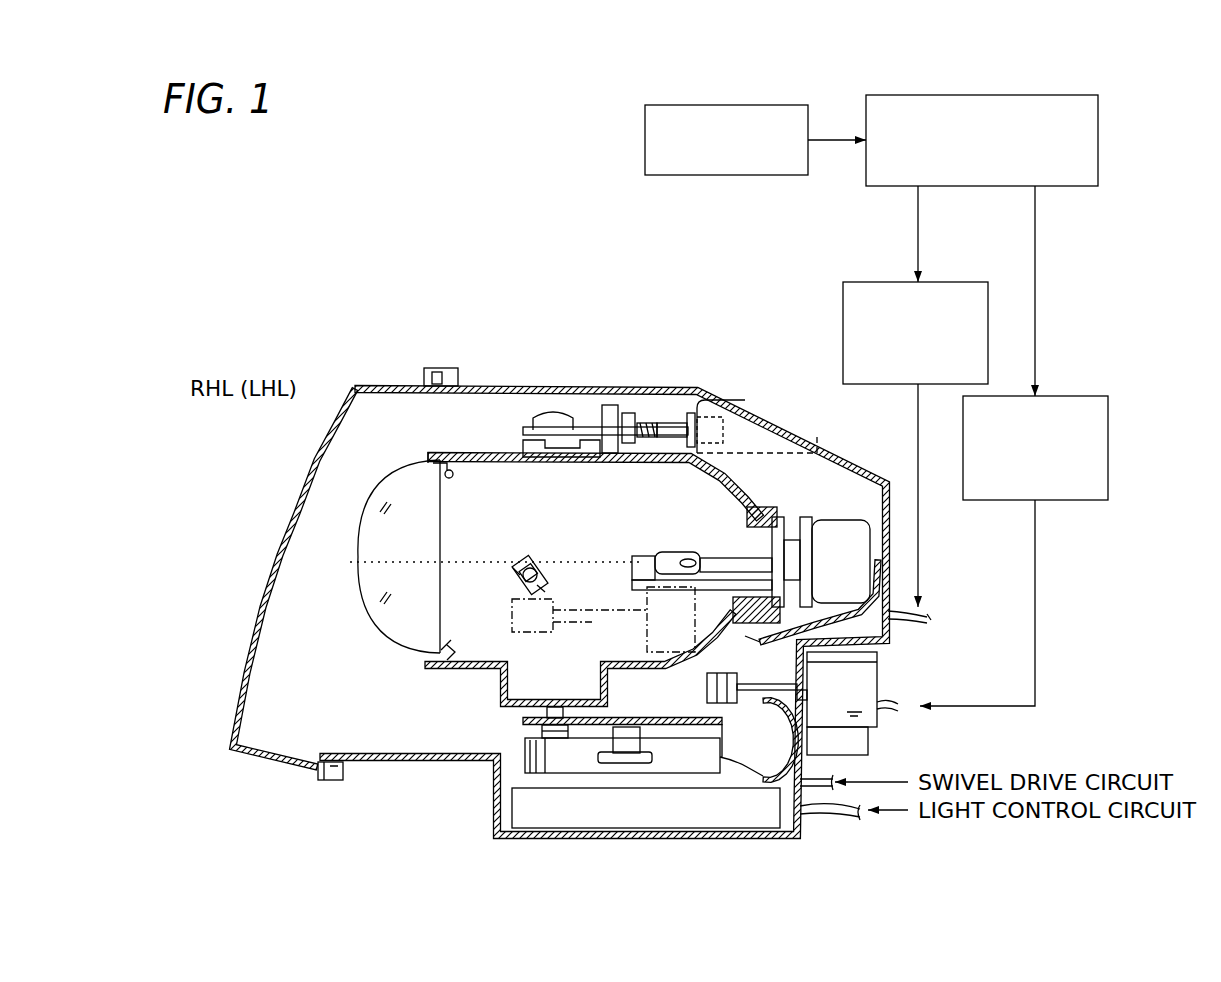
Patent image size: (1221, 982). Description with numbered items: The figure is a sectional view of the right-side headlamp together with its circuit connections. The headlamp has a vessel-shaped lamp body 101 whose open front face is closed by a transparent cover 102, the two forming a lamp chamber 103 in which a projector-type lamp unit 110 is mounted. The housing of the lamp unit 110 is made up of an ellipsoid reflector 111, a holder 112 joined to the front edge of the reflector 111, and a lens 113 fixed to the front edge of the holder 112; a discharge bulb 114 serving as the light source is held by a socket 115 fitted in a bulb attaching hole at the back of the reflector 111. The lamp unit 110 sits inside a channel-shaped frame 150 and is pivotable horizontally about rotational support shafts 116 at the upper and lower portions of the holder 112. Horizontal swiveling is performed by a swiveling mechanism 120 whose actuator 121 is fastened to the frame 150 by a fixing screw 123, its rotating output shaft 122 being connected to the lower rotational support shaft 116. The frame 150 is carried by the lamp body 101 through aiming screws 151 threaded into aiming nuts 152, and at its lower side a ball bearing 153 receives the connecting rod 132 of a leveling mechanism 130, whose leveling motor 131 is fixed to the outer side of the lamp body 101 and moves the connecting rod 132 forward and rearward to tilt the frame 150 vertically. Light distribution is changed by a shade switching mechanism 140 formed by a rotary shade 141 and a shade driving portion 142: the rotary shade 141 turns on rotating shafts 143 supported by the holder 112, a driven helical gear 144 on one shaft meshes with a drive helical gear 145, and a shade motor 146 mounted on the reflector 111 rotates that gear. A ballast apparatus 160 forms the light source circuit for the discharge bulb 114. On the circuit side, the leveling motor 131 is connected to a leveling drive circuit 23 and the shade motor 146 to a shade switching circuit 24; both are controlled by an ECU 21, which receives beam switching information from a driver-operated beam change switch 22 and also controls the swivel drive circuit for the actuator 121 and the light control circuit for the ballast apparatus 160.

The ECU 21 is at (1098, 143).
The beam change switch 22 is at (725, 176).
The leveling drive circuit 23 is at (1108, 447).
The shade switching circuit 24 is at (843, 335).
The lamp body 101 is at (720, 400).
The transparent cover 102 is at (277, 575).
The lamp chamber 103 is at (285, 658).
The lamp unit 110 is at (408, 460).
The reflector 111 is at (727, 487).
The holder 112 is at (465, 453).
The lens 113 is at (383, 517).
The discharge bulb 114 is at (690, 552).
The socket 115 is at (825, 543).
The rotational support shaft 116 is at (547, 420).
The swiveling mechanism 120 is at (620, 790).
The actuator 121 is at (588, 765).
The rotating output shaft 122 is at (562, 740).
The fixing screw 123 is at (623, 773).
The leveling mechanism 130 is at (877, 742).
The leveling motor 131 is at (860, 692).
The connecting rod 132 is at (865, 668).
The shade switching mechanism 140 is at (545, 670).
The rotary shade 141 is at (528, 558).
The shade driving portion 142 is at (583, 630).
The rotating shaft 143 is at (545, 578).
The driven helical gear 144 is at (513, 568).
The drive helical gear 145 is at (512, 625).
The shade motor 146 is at (647, 628).
The frame 150 is at (595, 425).
The aiming screw 151 is at (652, 420).
The aiming nut 152 is at (628, 420).
The ball bearing 153 is at (759, 740).
The ballast apparatus 160 is at (765, 820).